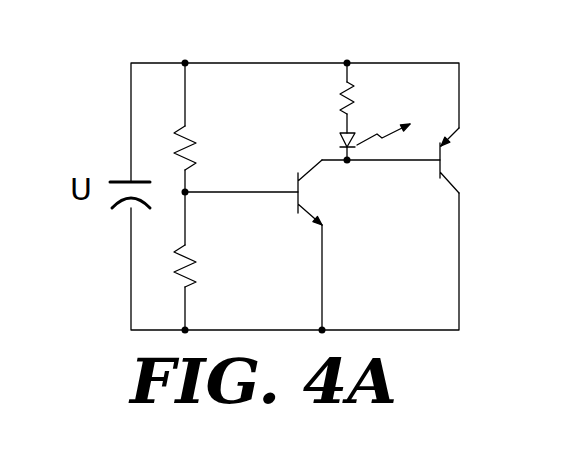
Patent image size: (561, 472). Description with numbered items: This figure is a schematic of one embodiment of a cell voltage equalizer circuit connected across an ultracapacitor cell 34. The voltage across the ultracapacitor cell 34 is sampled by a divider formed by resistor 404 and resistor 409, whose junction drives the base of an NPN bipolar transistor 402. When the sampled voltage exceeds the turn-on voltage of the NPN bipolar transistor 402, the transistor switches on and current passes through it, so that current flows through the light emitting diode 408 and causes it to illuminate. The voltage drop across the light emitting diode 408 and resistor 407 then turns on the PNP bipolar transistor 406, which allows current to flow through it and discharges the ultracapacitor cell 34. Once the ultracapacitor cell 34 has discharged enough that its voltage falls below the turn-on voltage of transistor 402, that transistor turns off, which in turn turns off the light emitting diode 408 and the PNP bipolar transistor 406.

The ultracapacitor cell 34 is at (112, 203).
The NPN bipolar transistor 402 is at (307, 193).
The resistor 404 is at (197, 148).
The PNP bipolar transistor 406 is at (443, 165).
The resistor 407 is at (342, 103).
The light emitting diode 408 is at (354, 127).
The resistor 409 is at (197, 262).